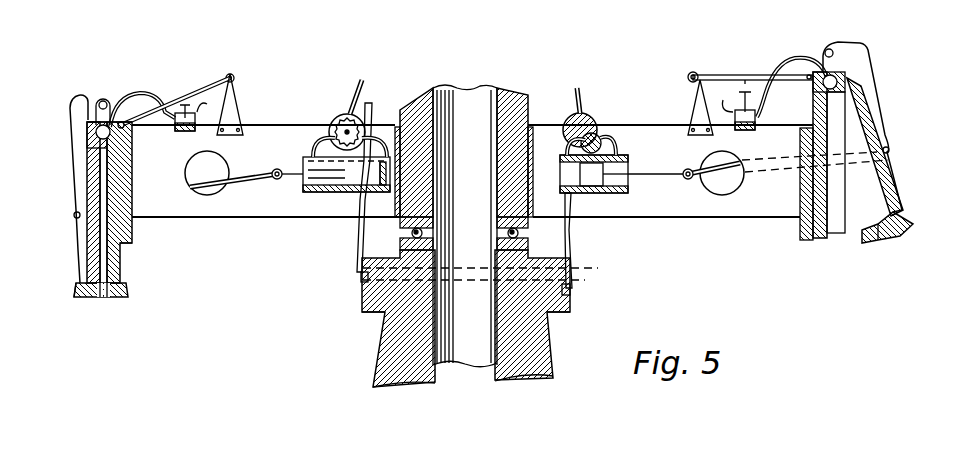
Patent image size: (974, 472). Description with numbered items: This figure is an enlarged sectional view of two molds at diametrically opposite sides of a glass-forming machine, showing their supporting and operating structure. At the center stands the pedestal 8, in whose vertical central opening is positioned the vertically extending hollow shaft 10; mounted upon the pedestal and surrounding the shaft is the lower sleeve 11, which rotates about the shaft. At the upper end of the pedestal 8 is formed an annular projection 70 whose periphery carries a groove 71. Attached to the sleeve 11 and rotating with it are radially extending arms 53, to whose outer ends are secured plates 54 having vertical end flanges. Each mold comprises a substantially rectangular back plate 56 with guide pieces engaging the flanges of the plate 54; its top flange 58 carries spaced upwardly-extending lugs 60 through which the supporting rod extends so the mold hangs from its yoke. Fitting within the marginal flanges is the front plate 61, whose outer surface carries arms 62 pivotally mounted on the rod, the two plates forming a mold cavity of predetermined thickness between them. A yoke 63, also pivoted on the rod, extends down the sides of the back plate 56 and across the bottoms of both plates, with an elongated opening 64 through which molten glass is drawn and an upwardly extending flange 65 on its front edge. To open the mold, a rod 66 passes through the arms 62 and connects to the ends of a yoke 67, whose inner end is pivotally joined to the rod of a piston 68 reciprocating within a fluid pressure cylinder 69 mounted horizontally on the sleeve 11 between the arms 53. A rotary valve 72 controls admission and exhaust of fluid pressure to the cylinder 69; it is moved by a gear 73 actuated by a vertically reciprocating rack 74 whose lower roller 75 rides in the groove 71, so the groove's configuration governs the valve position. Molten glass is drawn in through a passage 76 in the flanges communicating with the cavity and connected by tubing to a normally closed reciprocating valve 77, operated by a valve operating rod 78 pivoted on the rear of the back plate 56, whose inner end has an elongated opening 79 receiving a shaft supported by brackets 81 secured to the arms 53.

The pedestal 8 is at (538, 353).
The hollow shaft 10 is at (480, 353).
The lower sleeve 11 is at (520, 95).
The radially extending arms 53 is at (277, 207).
The plates 54 is at (132, 243).
The back plate 56 is at (116, 262).
The top flange 58 is at (98, 128).
The lugs 60 is at (100, 102).
The front plate 61 is at (90, 190).
The arms 62 is at (77, 148).
The yoke 63 is at (125, 297).
The elongated opening 64 is at (104, 298).
The upwardly extending flange 65 is at (78, 285).
The rod 66 is at (74, 215).
The yoke 67 is at (235, 190).
The piston 68 is at (591, 178).
The fluid pressure cylinder 69 is at (338, 192).
The annular projection 70 is at (570, 305).
The groove 71 is at (489, 269).
The rotary valve 72 is at (358, 97).
The gear 73 is at (340, 120).
The rack 74 is at (358, 227).
The roller 75 is at (360, 278).
The passage 76 is at (126, 97).
The reciprocating valve 77 is at (752, 108).
The valve operating rod 78 is at (760, 75).
The elongated opening 79 is at (235, 74).
The brackets 81 is at (240, 108).